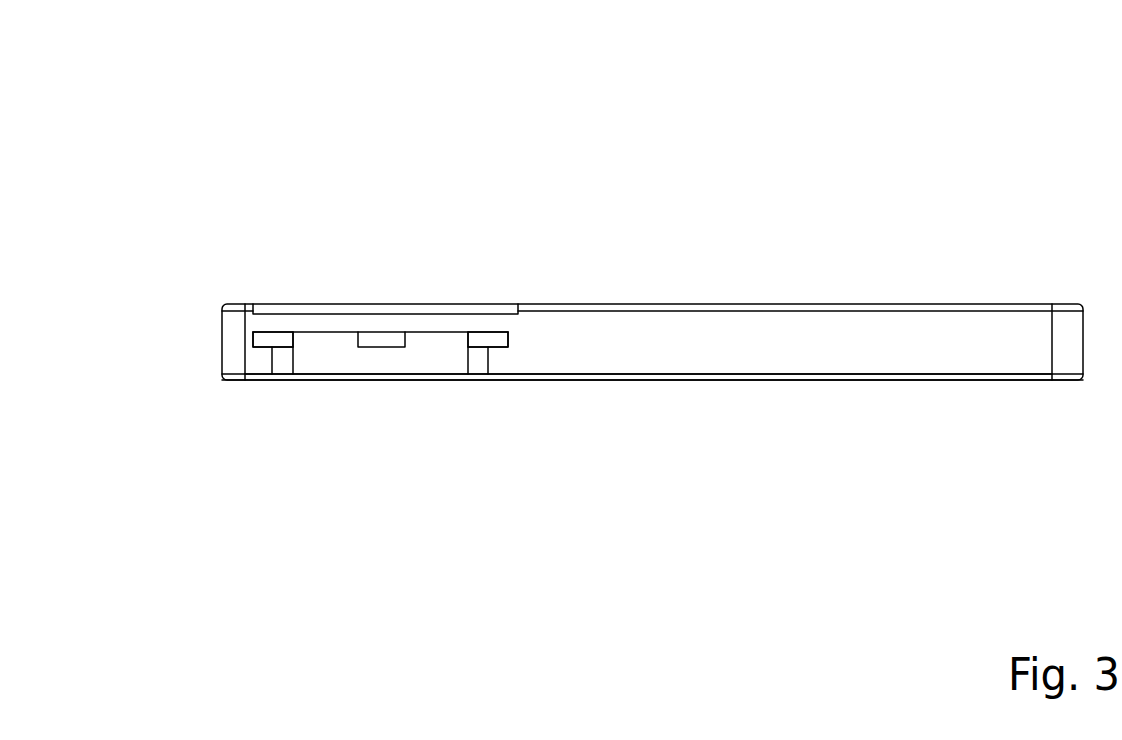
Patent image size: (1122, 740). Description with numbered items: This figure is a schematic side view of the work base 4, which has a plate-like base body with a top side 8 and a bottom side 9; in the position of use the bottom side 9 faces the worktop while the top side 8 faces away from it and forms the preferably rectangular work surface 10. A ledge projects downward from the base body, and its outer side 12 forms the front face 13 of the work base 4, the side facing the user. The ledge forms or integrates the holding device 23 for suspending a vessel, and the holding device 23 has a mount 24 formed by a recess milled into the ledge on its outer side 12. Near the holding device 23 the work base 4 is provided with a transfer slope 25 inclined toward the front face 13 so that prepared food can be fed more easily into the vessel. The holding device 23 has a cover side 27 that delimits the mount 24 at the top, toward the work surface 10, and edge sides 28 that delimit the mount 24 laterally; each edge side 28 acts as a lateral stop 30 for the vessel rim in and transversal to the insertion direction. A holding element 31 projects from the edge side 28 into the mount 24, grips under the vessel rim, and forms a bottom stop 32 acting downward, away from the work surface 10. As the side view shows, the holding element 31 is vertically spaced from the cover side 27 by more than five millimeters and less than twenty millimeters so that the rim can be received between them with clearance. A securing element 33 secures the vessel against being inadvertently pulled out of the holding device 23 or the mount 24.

The work base 4 is at (567, 264).
The top side 8 is at (652, 346).
The work surface 10 is at (652, 346).
The bottom side 9 is at (933, 381).
The outer side 12 is at (648, 277).
The front face 13 is at (860, 338).
The holding device 23 is at (418, 237).
The mount 24 is at (421, 303).
The transfer slope 25 is at (332, 312).
The cover side 27 is at (438, 333).
The edge side 28 is at (322, 264).
The lateral stop 30 is at (260, 340).
The holding element 31 is at (283, 363).
The bottom stop 32 is at (288, 333).
The securing element 33 is at (373, 338).